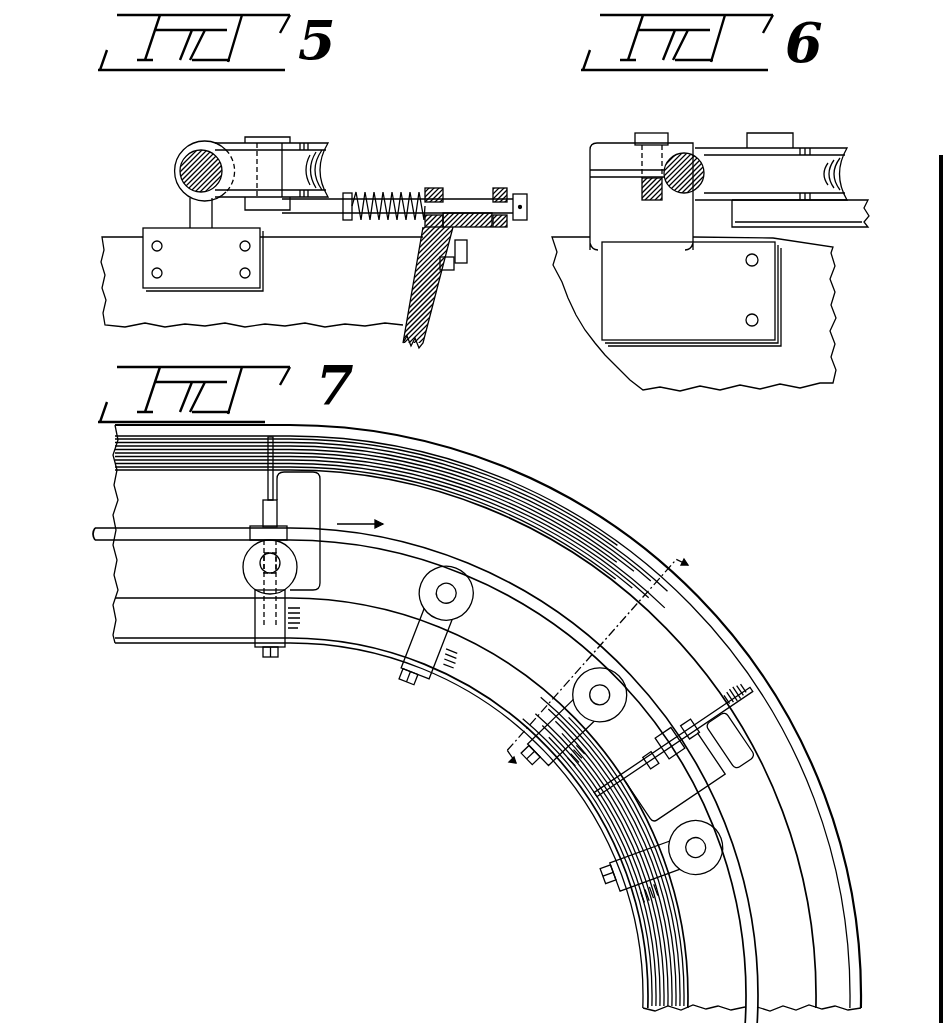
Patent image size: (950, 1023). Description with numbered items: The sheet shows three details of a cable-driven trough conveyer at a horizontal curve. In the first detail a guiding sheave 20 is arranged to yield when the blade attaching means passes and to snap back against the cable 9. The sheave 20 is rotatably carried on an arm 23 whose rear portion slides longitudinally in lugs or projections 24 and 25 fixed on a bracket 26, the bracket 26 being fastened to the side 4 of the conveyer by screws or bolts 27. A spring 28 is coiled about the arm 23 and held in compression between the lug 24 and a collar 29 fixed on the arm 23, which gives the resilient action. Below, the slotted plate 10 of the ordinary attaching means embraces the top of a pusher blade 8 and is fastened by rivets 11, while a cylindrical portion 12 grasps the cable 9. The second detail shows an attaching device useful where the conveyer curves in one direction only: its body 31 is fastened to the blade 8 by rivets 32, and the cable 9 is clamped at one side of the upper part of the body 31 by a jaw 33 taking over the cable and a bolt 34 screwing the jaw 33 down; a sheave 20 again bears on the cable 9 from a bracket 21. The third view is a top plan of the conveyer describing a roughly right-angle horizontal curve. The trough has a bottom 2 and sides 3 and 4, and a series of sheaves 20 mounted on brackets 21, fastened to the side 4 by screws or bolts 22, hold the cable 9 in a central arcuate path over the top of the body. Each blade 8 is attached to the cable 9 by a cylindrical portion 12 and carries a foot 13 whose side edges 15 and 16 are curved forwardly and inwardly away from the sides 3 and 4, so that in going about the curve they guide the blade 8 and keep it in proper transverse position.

In FIG. 7, the bottom 2 is at (612, 560).
In FIG. 7, the side 3 is at (585, 517).
In FIG. 5, the side 4 is at (430, 311).
In FIG. 7, the side 4 is at (468, 732).
In FIG. 5, the blade 8 is at (113, 237).
In FIG. 6, the blade 8 is at (774, 388).
In FIG. 7, the blade 8 is at (713, 710).
In FIG. 5, the cable 9 is at (190, 168).
In FIG. 6, the cable 9 is at (680, 160).
In FIG. 7, the cable 9 is at (157, 528).
In FIG. 5, the slotted plate 10 is at (196, 282).
In FIG. 7, the slotted plate 10 is at (687, 727).
In FIG. 5, the rivets 11 is at (152, 272).
In FIG. 5, the cylindrical portion 12 is at (192, 142).
In FIG. 7, the cylindrical portion 12 is at (262, 526).
In FIG. 7, the foot 13 is at (312, 578).
In FIG. 7, the side edge 15 is at (318, 470).
In FIG. 7, the side edge 16 is at (306, 632).
In FIG. 5, the sheave 20 is at (310, 143).
In FIG. 6, the sheave 20 is at (728, 148).
In FIG. 7, the sheave 20 is at (463, 607).
In FIG. 6, the bracket 21 is at (836, 228).
In FIG. 7, the bracket 21 is at (420, 645).
In FIG. 7, the screws or bolts 22 is at (414, 686).
In FIG. 5, the arm 23 is at (318, 205).
In FIG. 5, the lug 24 is at (438, 186).
In FIG. 5, the lug 25 is at (500, 187).
In FIG. 5, the bracket 26 is at (490, 229).
In FIG. 5, the screws or bolts 27 is at (462, 258).
In FIG. 5, the spring 28 is at (388, 190).
In FIG. 5, the collar 29 is at (350, 192).
In FIG. 6, the body 31 is at (594, 200).
In FIG. 6, the rivets 32 is at (758, 318).
In FIG. 6, the jaw 33 is at (604, 143).
In FIG. 6, the bolt 34 is at (652, 133).